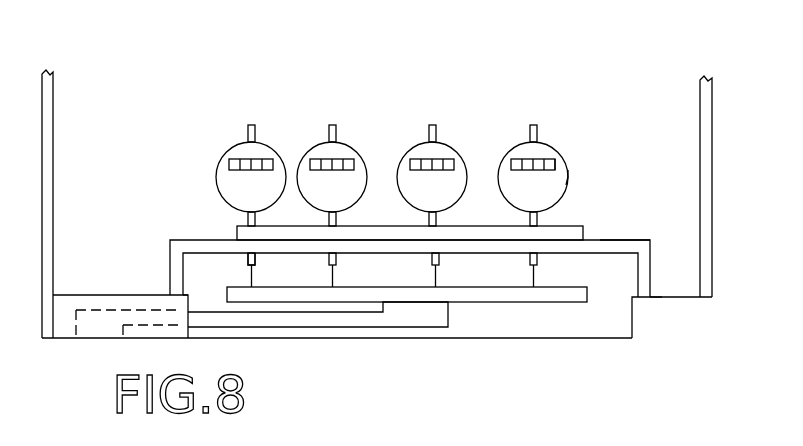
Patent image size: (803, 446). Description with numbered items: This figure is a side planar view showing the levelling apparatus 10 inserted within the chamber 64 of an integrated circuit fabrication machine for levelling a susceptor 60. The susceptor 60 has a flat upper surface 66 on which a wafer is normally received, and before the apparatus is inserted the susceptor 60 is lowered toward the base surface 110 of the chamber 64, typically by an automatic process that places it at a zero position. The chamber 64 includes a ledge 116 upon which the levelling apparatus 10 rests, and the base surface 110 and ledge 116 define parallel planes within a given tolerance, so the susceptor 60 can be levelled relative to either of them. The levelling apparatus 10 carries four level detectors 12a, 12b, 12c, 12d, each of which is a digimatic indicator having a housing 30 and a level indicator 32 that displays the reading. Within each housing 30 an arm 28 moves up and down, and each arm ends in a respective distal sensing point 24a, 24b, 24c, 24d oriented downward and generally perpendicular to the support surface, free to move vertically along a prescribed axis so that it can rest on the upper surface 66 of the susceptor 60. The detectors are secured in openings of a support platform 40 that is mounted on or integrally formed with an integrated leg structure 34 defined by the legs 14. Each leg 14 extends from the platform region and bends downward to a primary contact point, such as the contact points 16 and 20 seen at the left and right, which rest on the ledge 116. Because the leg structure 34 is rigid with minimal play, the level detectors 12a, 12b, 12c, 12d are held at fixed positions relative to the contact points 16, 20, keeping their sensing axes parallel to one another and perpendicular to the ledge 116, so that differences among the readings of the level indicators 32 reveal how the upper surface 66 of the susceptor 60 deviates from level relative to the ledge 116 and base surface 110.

The levelling apparatus 10 is at (618, 96).
The level detector 12a is at (271, 143).
The level detector 12b is at (352, 143).
The level detector 12c is at (450, 143).
The level detector 12d is at (549, 143).
The leg 14 is at (652, 268).
The primary contact point 16 is at (168, 284).
The primary contact point 20 is at (656, 297).
The distal sensing point 24a is at (247, 284).
The distal sensing point 24b is at (328, 284).
The distal sensing point 24c is at (431, 284).
The distal sensing point 24d is at (530, 284).
The arm 28 is at (247, 262).
The housing 30 is at (569, 174).
The level indicator 32 is at (556, 165).
The integrated leg structure 34 is at (620, 240).
The support platform 40 is at (583, 228).
The susceptor 60 is at (555, 307).
The chamber 64 is at (180, 173).
The upper surface 66 is at (588, 290).
The base surface 110 is at (503, 340).
The ledge 116 is at (110, 295).